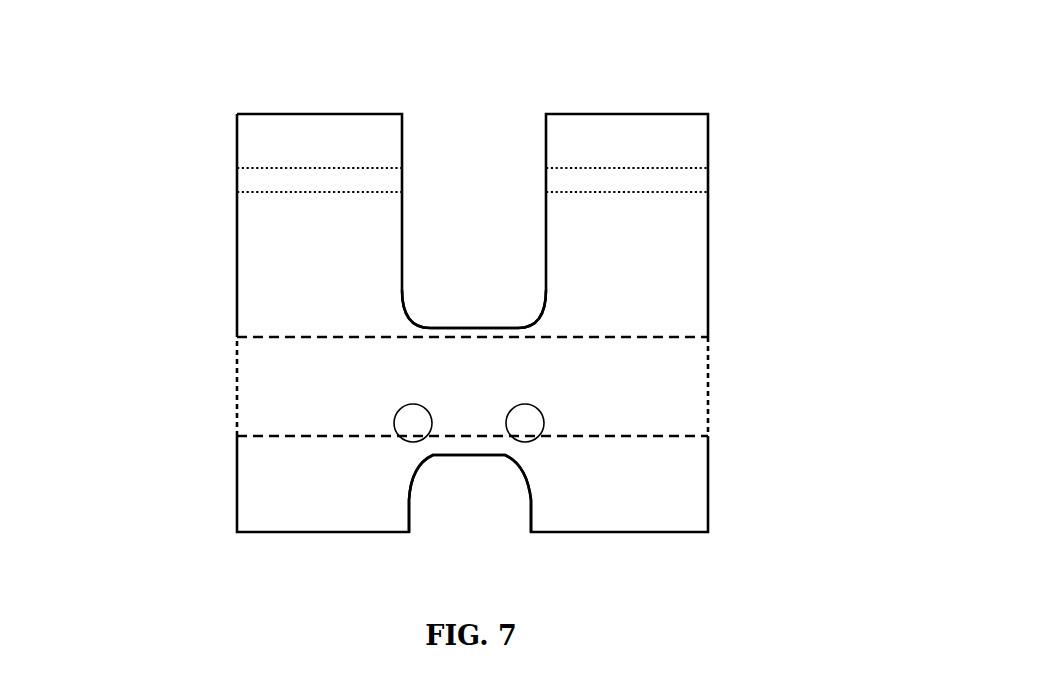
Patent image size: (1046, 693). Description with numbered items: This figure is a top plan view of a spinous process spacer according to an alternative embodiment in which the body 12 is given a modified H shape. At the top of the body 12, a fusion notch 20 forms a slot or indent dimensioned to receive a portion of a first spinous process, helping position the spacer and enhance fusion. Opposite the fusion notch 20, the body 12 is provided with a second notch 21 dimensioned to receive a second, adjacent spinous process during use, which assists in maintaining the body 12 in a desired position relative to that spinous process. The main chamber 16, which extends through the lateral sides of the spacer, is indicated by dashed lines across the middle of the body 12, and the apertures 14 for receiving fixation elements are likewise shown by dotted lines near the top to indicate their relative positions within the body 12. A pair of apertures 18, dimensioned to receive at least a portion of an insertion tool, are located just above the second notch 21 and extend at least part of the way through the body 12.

The body 12 is at (180, 113).
The aperture 14 is at (270, 180).
The main chamber 16 is at (679, 396).
The apertures 18 is at (416, 425).
The fusion notch 20 is at (465, 213).
The second notch 21 is at (478, 488).